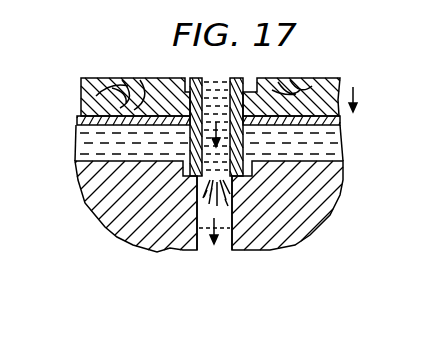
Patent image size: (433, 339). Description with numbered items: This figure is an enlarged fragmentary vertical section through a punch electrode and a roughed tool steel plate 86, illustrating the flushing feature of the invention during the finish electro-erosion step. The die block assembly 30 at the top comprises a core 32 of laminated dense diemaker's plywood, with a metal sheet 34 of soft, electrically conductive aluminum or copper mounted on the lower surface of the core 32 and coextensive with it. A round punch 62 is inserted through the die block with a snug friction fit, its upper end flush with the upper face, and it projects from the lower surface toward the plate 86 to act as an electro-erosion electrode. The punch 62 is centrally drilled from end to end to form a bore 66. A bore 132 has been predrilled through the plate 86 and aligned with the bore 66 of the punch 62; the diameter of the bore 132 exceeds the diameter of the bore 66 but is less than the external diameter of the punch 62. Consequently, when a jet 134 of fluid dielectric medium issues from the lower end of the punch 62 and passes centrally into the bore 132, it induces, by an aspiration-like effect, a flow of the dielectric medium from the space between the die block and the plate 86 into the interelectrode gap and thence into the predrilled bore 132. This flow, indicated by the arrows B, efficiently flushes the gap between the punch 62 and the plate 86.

The fastener assembly 30 is at (114, 70).
The core 32 is at (82, 95).
The metal sheet 34 is at (78, 126).
The round punch 62 is at (191, 80).
The bore 66 is at (222, 78).
The tool steel plate 86 is at (343, 168).
The bore 132 is at (228, 250).
The jet 134 is at (212, 200).
The arrows B is at (247, 153).